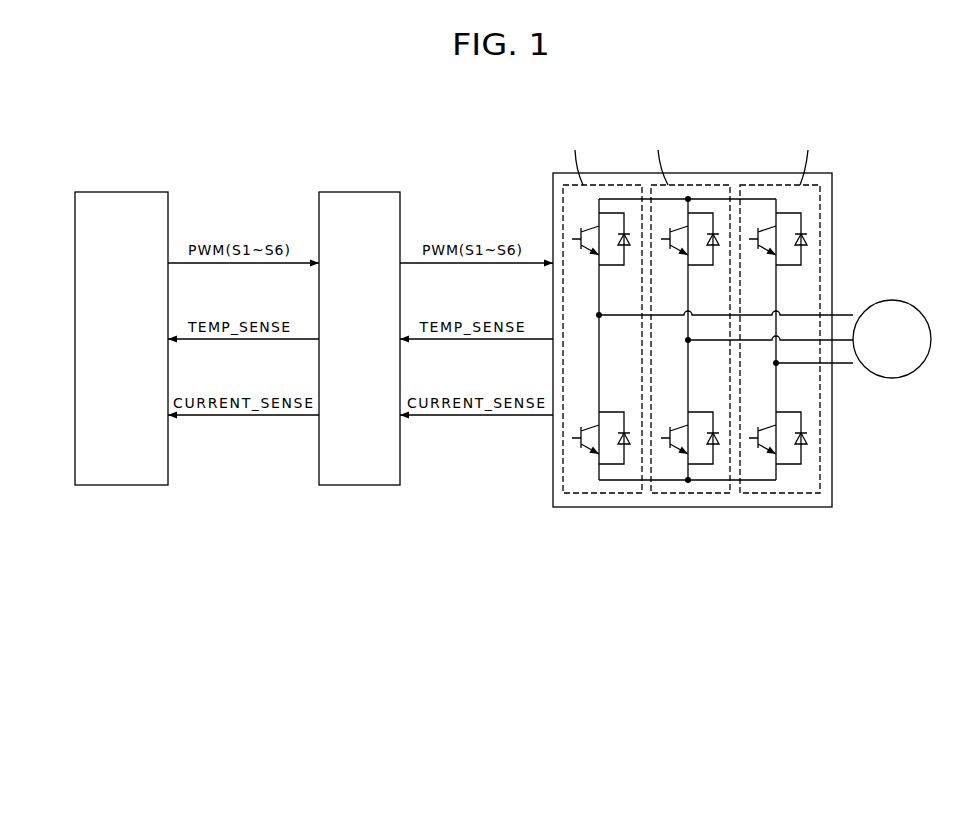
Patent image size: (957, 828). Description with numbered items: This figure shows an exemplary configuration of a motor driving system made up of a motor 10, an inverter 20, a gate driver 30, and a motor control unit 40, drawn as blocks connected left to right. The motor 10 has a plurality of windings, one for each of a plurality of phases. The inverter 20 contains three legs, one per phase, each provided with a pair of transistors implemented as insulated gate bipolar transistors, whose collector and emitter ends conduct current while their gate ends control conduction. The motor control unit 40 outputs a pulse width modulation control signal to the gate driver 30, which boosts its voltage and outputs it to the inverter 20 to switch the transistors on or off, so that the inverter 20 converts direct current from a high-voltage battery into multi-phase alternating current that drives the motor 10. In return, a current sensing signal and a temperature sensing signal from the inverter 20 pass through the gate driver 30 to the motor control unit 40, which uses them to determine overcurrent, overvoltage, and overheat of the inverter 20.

The motor 10 is at (889, 379).
The inverter 20 is at (723, 173).
The gate driver 30 is at (367, 191).
The motor control unit 40 is at (137, 191).